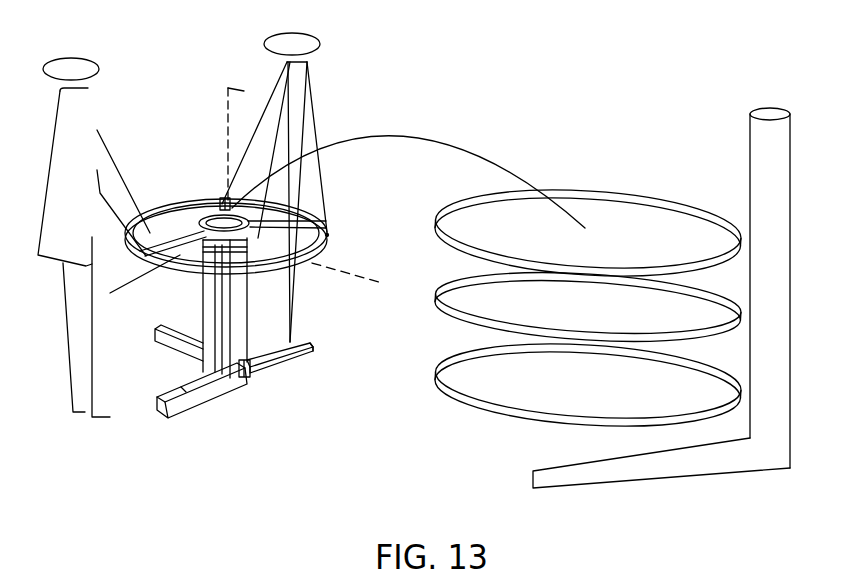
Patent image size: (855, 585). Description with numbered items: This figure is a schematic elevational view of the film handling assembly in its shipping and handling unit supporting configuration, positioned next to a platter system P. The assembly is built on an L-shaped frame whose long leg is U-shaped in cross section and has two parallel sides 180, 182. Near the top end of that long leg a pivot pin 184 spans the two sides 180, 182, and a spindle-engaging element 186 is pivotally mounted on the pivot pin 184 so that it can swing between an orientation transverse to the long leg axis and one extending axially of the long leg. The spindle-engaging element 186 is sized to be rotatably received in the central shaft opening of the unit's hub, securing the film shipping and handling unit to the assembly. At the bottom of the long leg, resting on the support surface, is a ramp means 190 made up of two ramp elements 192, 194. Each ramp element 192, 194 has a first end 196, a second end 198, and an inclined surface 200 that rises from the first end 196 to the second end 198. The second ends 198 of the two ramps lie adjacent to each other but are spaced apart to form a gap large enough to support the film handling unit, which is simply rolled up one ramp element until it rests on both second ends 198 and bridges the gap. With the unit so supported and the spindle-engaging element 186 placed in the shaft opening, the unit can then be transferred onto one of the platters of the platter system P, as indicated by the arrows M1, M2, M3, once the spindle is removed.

The parallel side 180 is at (204, 294).
The parallel side 182 is at (275, 321).
The pivot pin 184 is at (205, 300).
The spindle-engaging element 186 is at (219, 203).
The ramp means 190 is at (233, 434).
The ramp element 192 is at (198, 408).
The ramp element 194 is at (270, 360).
The first end 196 is at (313, 346).
The second end 198 is at (244, 374).
The inclined surface 200 is at (183, 390).
The arrow M1 is at (424, 133).
The arrow M2 is at (476, 295).
The arrow M3 is at (476, 382).
The platter system P is at (690, 198).